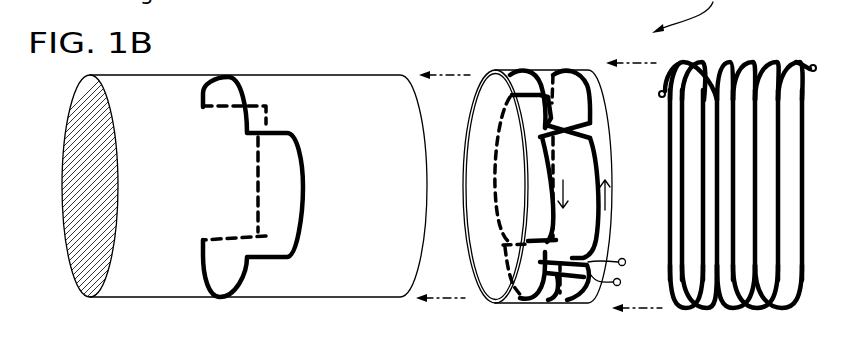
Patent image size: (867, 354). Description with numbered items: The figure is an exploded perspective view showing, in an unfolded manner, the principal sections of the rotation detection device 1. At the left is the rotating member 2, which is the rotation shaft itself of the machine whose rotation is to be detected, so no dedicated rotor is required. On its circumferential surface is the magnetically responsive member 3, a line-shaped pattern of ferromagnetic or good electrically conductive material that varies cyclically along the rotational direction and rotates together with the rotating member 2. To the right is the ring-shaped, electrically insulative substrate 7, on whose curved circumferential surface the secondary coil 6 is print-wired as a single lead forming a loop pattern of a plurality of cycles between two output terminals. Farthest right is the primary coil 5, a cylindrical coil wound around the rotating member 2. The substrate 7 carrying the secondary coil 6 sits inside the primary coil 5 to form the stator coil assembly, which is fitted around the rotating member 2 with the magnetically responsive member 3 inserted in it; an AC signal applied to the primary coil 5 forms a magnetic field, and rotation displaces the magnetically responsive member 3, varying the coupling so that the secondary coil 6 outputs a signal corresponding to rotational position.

The rotation detection device 1 is at (250, 317).
The rotating member 2 is at (333, 75).
The magnetically responsive member 3 is at (278, 131).
The primary coil 5 is at (753, 62).
The secondary coil 6 is at (586, 93).
The substrate 7 is at (493, 70).